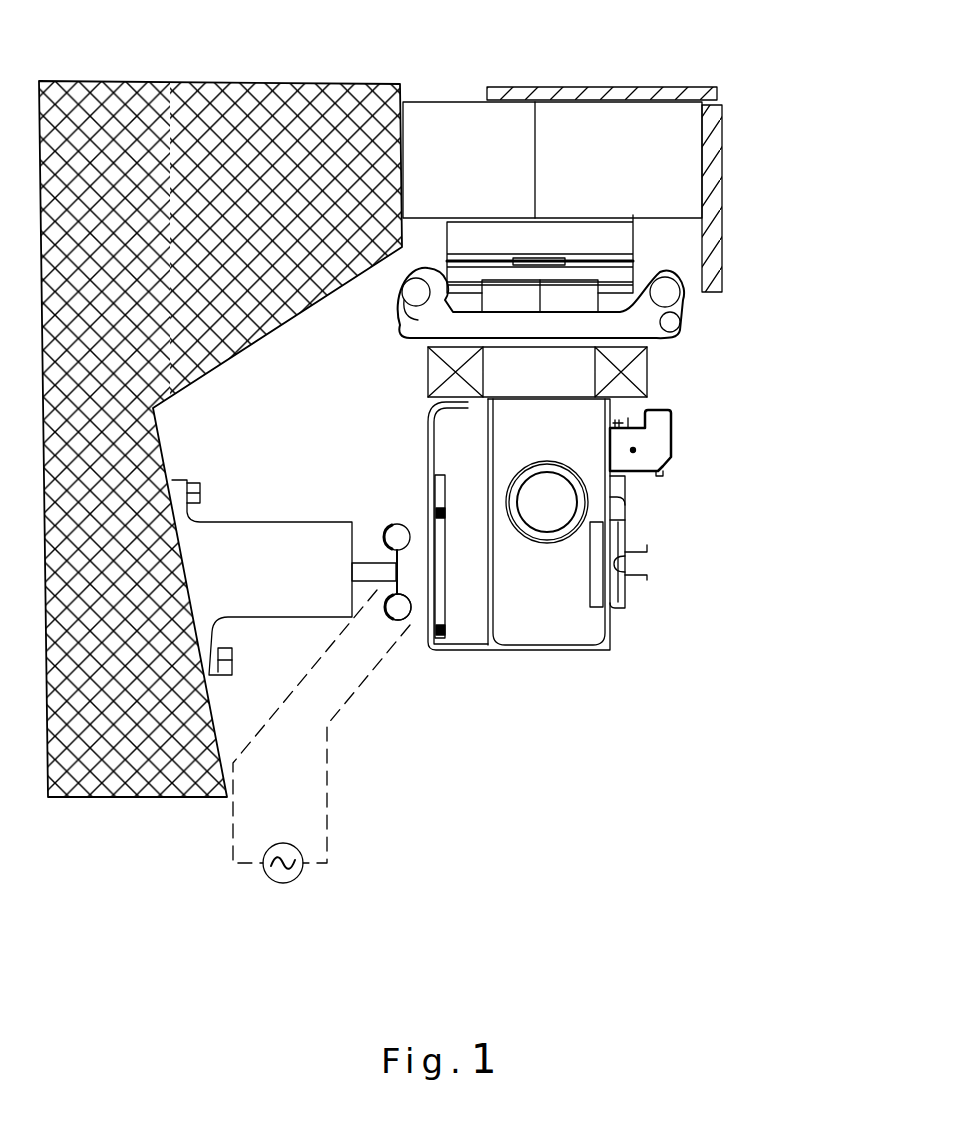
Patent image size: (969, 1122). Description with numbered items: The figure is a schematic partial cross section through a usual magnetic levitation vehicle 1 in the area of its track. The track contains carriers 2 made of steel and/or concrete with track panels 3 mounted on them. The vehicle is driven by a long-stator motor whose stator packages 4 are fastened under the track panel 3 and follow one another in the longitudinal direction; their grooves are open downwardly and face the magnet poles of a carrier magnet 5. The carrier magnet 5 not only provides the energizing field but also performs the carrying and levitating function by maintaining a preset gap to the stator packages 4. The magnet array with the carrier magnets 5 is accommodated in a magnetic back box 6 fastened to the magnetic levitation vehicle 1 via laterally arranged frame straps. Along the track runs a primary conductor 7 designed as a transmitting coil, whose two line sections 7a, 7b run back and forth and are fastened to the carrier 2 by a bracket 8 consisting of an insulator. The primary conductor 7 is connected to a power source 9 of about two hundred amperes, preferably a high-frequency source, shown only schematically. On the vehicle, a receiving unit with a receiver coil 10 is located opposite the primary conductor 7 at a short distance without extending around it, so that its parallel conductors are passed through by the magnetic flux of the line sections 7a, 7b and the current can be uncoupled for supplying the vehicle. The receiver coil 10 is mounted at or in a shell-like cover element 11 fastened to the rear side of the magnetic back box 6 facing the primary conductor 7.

The magnetic levitation vehicle 1 is at (672, 494).
The carrier 2 is at (145, 810).
The track panel 3 is at (617, 88).
The stator package 4 is at (567, 297).
The carrier magnet 5 is at (558, 377).
The magnetic back box 6 is at (577, 558).
The primary conductor 7 is at (421, 630).
The line section 7a is at (428, 763).
The line section 7b is at (422, 706).
The bracket 8 is at (258, 575).
The power source 9 is at (297, 887).
The receiver coil 10 is at (443, 610).
The cover element 11 is at (448, 408).